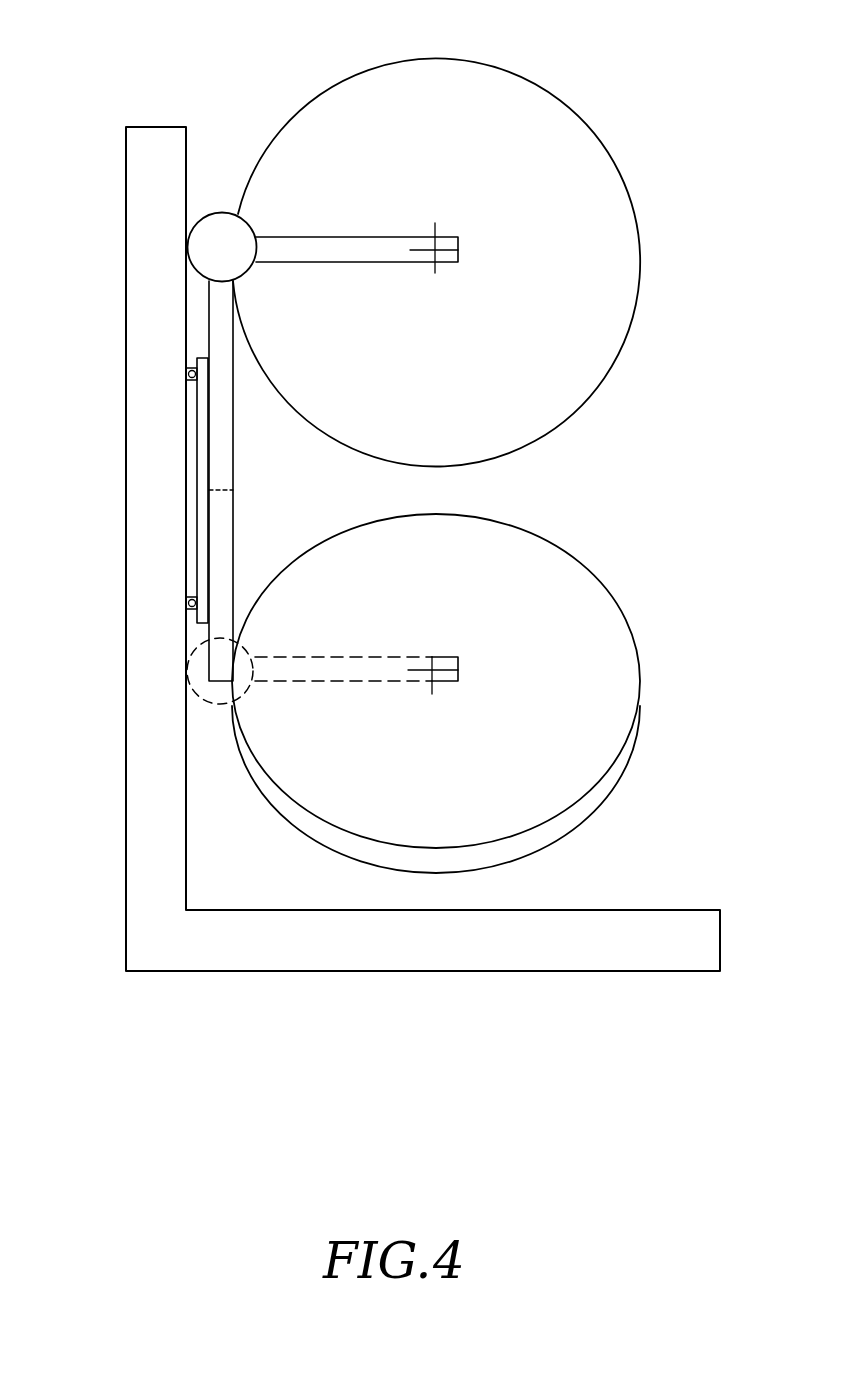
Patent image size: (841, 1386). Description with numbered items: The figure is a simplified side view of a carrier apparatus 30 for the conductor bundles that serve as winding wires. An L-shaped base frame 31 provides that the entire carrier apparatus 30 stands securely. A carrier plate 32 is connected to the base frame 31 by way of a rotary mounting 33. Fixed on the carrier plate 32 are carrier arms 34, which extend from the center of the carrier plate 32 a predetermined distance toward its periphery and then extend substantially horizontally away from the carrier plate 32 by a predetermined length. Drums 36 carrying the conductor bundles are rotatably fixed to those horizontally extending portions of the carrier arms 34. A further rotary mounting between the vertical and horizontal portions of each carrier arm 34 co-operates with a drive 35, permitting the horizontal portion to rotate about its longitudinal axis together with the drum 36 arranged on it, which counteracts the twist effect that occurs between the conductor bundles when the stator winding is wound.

The carrier apparatus 30 is at (203, 97).
The base frame 31 is at (333, 950).
The carrier plate 32 is at (200, 482).
The rotary mounting 33 is at (187, 373).
The carrier arms 34 is at (220, 450).
The drive 35 is at (205, 251).
The drums 36 is at (615, 268).